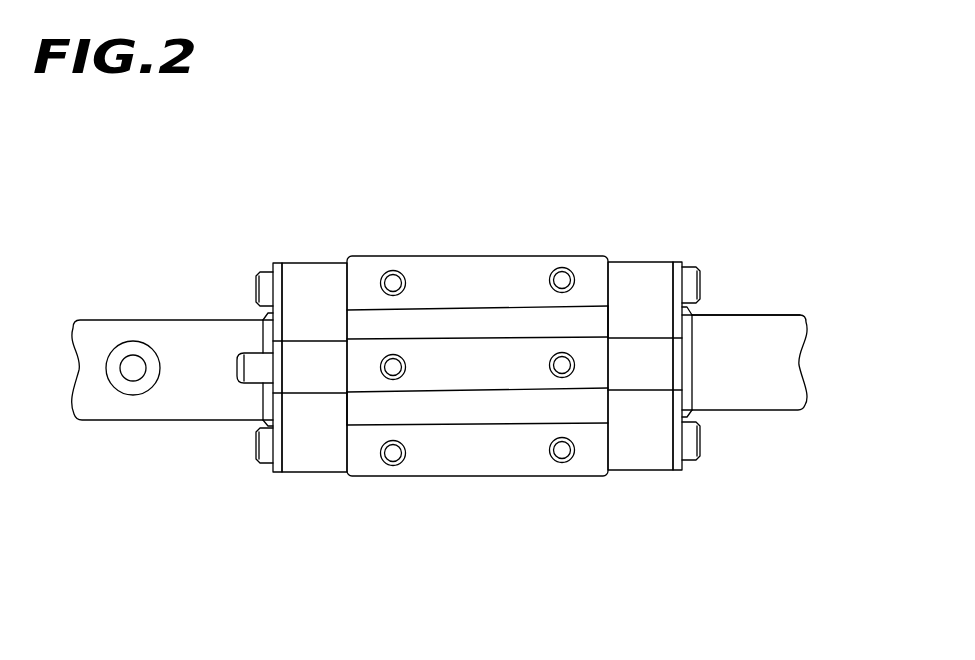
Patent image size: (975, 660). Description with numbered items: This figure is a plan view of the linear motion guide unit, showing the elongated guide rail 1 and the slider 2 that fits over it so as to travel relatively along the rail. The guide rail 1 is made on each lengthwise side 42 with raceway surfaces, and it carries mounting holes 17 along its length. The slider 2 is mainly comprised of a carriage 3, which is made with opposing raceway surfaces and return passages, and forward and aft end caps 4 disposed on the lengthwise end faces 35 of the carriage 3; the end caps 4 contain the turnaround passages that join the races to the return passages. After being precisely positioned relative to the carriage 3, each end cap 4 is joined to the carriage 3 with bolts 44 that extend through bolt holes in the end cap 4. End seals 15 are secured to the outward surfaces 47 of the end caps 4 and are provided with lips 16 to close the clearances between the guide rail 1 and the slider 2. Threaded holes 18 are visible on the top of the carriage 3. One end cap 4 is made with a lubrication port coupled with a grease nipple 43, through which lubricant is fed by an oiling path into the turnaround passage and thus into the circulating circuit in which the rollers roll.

The guide rail 1 is at (774, 332).
The slider 2 is at (538, 255).
The carriage 3 is at (485, 460).
The end cap 4 is at (313, 455).
The end seal 15 is at (281, 297).
The lip 16 is at (268, 400).
The mounting hole 17 is at (132, 364).
The threaded hole 18 is at (394, 280).
The end face 35 is at (612, 320).
The lengthwise side 42 is at (154, 320).
The grease nipple 43 is at (247, 360).
The bolt 44 is at (690, 270).
The outward surface 47 is at (690, 318).